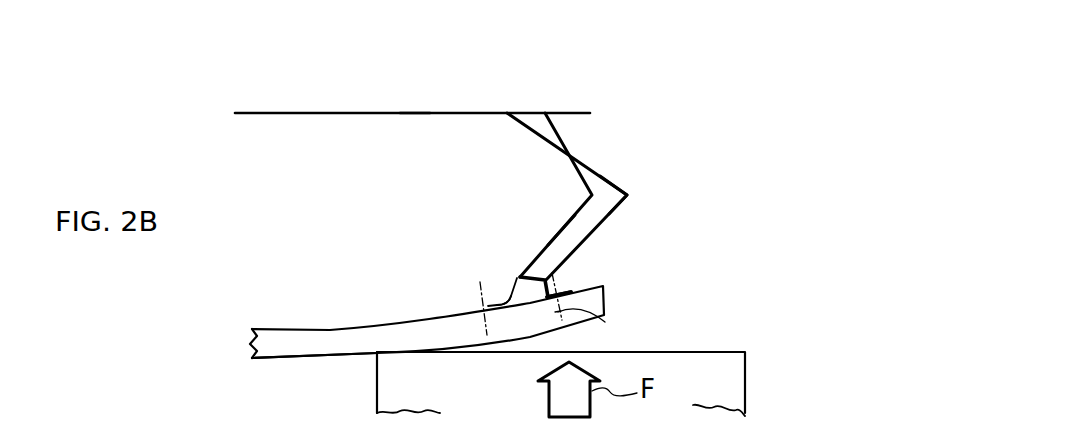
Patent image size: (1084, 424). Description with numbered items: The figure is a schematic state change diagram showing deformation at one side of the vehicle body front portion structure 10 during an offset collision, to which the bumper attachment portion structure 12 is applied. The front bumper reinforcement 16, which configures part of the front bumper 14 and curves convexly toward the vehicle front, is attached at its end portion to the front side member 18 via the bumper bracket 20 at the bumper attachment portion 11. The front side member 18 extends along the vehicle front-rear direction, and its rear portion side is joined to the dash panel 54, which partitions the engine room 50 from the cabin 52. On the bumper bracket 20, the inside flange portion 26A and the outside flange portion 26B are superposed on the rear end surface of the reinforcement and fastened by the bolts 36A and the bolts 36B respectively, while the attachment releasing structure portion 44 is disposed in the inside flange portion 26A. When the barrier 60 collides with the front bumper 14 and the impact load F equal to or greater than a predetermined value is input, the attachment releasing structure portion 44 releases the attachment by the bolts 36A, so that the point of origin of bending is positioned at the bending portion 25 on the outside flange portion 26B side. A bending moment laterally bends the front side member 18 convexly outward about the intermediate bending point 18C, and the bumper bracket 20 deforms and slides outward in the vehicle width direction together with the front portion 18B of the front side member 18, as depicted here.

The vehicle body front portion structure 10 is at (747, 172).
The bumper attachment portion 11 is at (627, 255).
The bumper attachment portion structure 12 is at (610, 248).
The front bumper 14 is at (315, 363).
The front bumper reinforcement 16 is at (337, 321).
The front side member 18 is at (623, 170).
The front portion 18B is at (550, 241).
The intermediate bending point 18C is at (628, 194).
The bumper bracket 20 is at (506, 278).
The bending portion 25 is at (535, 304).
The inside flange portion 26A is at (507, 300).
The outside flange portion 26B is at (569, 284).
The bolt 36A is at (481, 283).
The bolt 36B is at (605, 322).
The attachment releasing structure portion 44 is at (463, 263).
The engine room 50 is at (352, 210).
The cabin 52 is at (374, 105).
The dash panel 54 is at (412, 114).
The barrier 60 is at (746, 383).